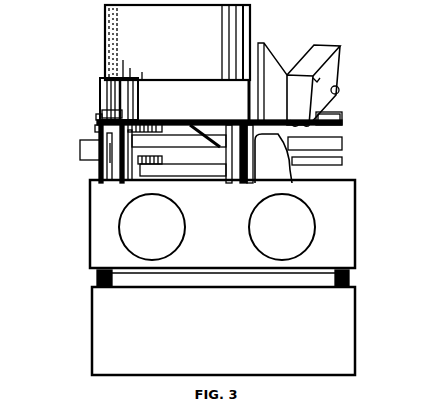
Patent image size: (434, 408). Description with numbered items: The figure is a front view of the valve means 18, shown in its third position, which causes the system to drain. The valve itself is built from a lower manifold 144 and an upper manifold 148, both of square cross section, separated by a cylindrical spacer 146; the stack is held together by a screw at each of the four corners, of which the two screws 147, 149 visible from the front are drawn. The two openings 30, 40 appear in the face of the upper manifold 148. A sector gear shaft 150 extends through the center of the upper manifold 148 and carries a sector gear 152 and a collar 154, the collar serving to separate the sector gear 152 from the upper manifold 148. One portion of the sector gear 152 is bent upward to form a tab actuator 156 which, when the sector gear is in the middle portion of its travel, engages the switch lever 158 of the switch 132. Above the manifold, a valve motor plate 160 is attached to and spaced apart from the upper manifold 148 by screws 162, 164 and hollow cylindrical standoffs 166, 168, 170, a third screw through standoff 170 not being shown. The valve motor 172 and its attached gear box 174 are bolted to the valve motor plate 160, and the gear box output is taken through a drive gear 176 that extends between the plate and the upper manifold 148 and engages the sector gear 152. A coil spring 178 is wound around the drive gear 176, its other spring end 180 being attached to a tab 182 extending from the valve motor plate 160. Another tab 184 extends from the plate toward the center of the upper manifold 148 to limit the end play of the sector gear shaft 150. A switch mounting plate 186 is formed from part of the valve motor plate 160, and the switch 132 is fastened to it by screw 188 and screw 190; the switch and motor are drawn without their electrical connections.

The valve means 18 is at (361, 210).
The first shaft opening 30 is at (170, 238).
The second shaft opening 40 is at (262, 232).
The switch 132 is at (333, 67).
The lower manifold 144 is at (105, 321).
The spacer 146 is at (192, 275).
The screw 147 is at (118, 287).
The upper manifold 148 is at (105, 243).
The screw 149 is at (336, 285).
The sector gear shaft 150 is at (213, 156).
The sector gear 152 is at (180, 177).
The collar 154 is at (210, 176).
The tab actuator 156 is at (267, 158).
The switch lever 158 is at (293, 122).
The valve motor plate 160 is at (100, 118).
The screw 162 is at (117, 110).
The screw 164 is at (247, 96).
The standoff 166 is at (110, 172).
The standoff 168 is at (217, 123).
The standoff 170 is at (286, 172).
The valve motor 172 is at (110, 53).
The gear box 174 is at (103, 90).
The drive gear 176 is at (100, 132).
The coil spring 178 is at (82, 150).
The spring end 180 is at (342, 145).
The tab 182 is at (342, 120).
The tab 184 is at (165, 122).
The switch mounting plate 186 is at (268, 60).
The screw 188 is at (330, 60).
The screw 190 is at (339, 88).